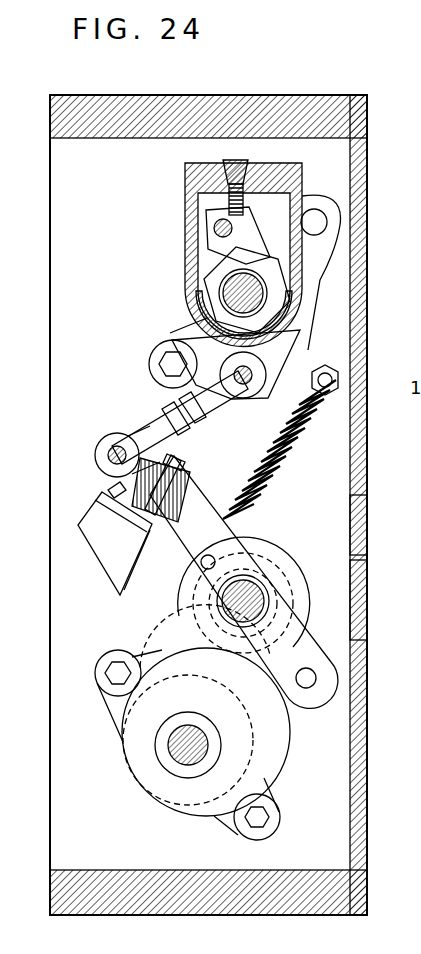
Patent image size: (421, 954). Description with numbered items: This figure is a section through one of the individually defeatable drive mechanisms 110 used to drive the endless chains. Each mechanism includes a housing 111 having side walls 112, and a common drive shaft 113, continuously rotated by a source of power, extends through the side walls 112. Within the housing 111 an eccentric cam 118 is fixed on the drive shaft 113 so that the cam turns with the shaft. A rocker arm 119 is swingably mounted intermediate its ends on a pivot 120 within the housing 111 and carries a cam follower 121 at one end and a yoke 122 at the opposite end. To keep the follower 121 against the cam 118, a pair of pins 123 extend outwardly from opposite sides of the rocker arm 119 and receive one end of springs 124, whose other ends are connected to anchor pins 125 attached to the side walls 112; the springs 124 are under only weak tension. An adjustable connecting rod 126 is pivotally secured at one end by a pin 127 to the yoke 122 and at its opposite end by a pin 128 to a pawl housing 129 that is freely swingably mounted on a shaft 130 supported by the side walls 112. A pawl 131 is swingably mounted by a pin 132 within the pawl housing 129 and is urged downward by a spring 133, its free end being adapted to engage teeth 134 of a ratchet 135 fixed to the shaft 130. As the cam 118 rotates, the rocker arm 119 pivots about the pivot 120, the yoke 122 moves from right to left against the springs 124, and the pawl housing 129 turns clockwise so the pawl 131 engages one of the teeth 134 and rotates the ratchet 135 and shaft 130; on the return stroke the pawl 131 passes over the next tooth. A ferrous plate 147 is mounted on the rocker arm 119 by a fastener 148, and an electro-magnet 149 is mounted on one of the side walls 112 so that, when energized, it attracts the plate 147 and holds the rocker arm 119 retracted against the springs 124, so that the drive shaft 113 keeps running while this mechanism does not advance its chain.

The drive mechanism 110 is at (377, 759).
The housing 111 is at (356, 600).
The side walls 112 is at (330, 528).
The drive shaft 113 is at (178, 748).
The eccentric cam 118 is at (280, 763).
The rocker arm 119 is at (237, 550).
The pivot 120 is at (255, 597).
The cam follower 121 is at (316, 704).
The yoke 122 is at (150, 455).
The pins 123 is at (208, 563).
The springs 124 is at (280, 481).
The anchor pins 125 is at (318, 373).
The adjustable connecting rod 126 is at (205, 410).
The pin 127 is at (100, 477).
The pin 128 is at (252, 375).
The pawl housing 129 is at (191, 247).
The shaft 130 is at (240, 293).
The pawl 131 is at (249, 233).
The pin 132 is at (215, 228).
The spring 133 is at (236, 204).
The teeth 134 is at (202, 284).
The ratchet 135 is at (272, 293).
The ferrous plate 147 is at (122, 500).
The fastener 148 is at (188, 468).
The electro-magnet 149 is at (127, 552).